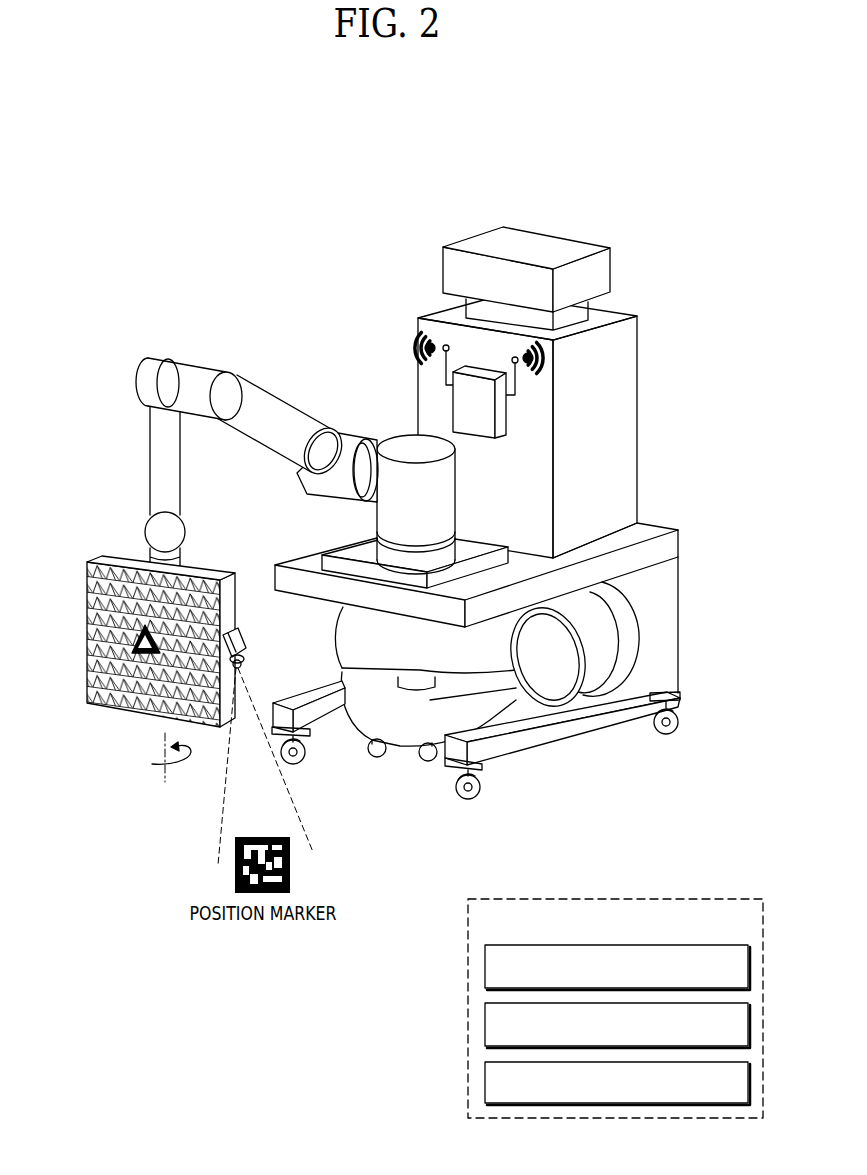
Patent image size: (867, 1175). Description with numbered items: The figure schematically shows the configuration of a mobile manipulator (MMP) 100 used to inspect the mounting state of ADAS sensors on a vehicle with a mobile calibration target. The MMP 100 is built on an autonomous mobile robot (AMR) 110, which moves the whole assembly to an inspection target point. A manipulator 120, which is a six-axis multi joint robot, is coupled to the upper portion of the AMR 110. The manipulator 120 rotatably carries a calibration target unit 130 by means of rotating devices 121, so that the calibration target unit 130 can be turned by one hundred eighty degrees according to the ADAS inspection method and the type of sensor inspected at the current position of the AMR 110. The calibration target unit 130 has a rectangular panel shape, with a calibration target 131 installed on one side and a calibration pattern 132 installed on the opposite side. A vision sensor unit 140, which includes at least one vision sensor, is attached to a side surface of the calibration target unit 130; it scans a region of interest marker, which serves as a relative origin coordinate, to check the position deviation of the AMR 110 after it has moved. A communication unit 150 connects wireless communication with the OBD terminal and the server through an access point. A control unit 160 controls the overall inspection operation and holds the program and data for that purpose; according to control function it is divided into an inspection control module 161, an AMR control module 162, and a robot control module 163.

The mobile manipulator (MMP) 100 is at (289, 246).
The autonomous mobile robot (AMR) 110 is at (553, 670).
The manipulator 120 is at (198, 367).
The rotating device 121 is at (180, 555).
The calibration target unit 130 is at (108, 556).
The calibration target 131 is at (112, 757).
The calibration pattern 132 is at (171, 753).
The vision sensor unit 140 is at (246, 645).
The communication unit 150 is at (453, 410).
The control unit 160 is at (708, 885).
The inspection control module 161 is at (485, 968).
The AMR control module 162 is at (485, 1027).
The robot control module 163 is at (485, 1084).